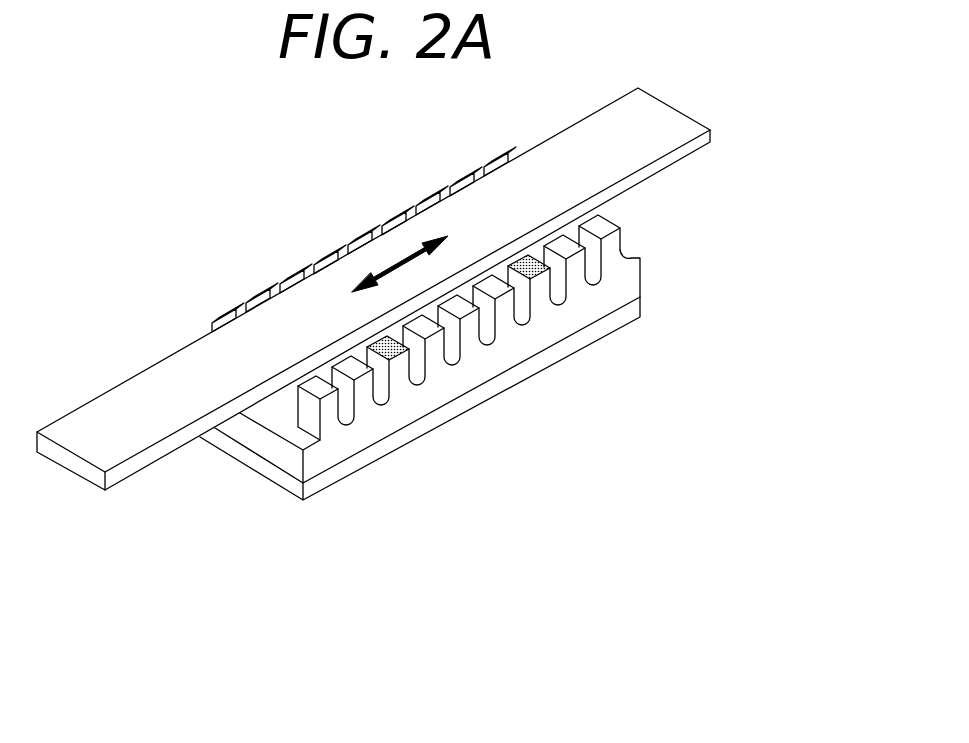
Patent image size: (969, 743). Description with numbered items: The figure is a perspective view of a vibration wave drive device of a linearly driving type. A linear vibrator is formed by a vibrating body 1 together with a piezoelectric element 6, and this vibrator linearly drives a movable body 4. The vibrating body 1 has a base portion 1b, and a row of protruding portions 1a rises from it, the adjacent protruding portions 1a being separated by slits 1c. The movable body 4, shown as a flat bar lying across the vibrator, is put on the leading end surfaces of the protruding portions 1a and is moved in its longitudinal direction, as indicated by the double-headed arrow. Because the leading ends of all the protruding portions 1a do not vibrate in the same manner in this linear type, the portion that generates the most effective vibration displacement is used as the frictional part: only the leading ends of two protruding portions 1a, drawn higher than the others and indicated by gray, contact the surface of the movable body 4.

The movable body 4 is at (638, 133).
The piezoelectric element 6 is at (262, 468).
The vibrating body 1 is at (478, 366).
The protruding portion 1a is at (473, 345).
The base portion 1b is at (467, 377).
The slit 1c is at (466, 364).